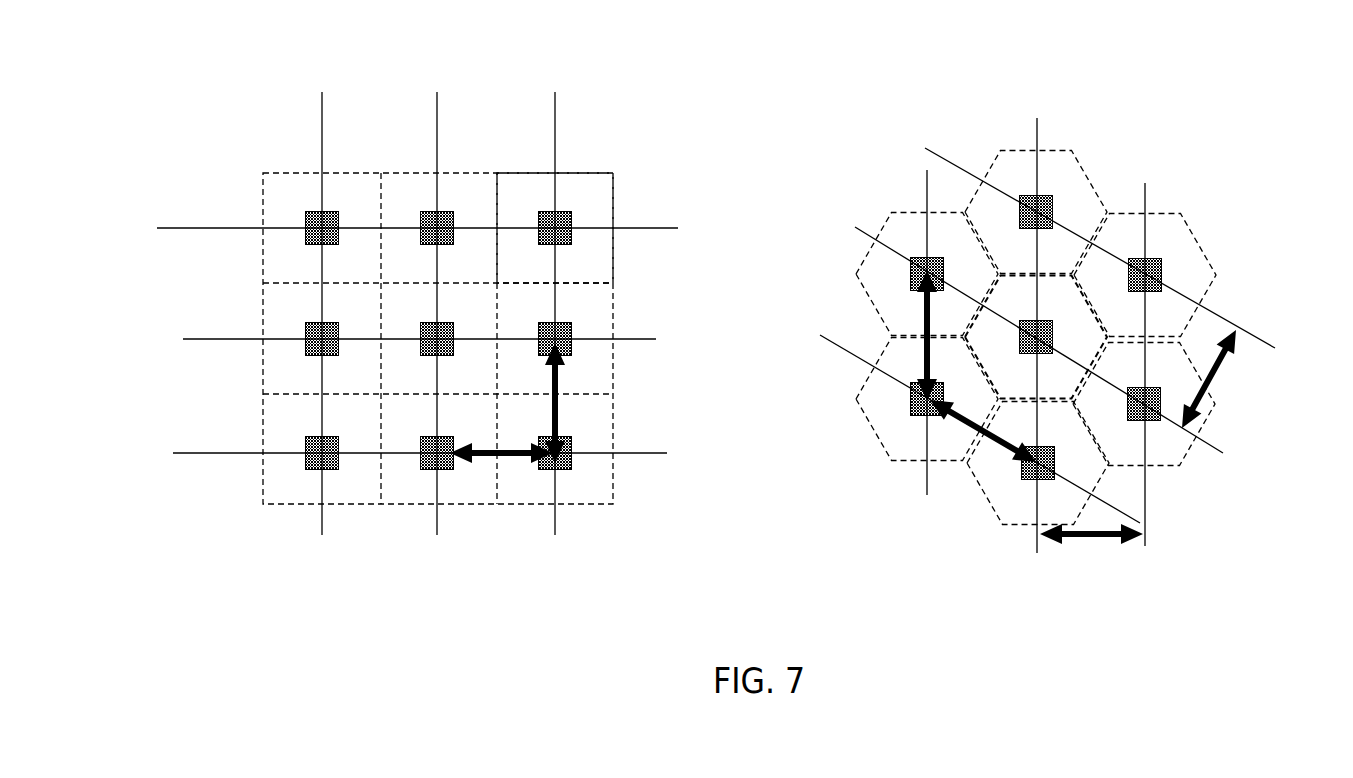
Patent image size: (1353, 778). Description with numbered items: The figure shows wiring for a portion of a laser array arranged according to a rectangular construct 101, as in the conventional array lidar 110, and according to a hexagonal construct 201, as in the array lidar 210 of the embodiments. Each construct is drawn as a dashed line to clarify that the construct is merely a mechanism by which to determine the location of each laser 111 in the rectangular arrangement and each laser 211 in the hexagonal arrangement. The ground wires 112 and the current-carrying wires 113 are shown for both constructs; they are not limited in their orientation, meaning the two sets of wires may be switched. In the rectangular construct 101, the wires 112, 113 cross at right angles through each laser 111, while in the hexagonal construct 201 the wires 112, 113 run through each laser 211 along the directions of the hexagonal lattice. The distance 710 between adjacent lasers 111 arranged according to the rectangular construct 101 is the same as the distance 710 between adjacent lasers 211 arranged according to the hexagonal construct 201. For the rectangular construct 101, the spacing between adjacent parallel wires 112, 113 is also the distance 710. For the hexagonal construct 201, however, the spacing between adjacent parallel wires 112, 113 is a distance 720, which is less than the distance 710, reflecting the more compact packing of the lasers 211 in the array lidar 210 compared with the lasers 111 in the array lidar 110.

The array lidar 110 is at (667, 102).
The rectangular construct 101 is at (582, 175).
The laser 111 is at (582, 212).
The ground wires 112 is at (202, 237).
The current-carrying wires 113 is at (422, 120).
The array lidar 210 is at (937, 133).
The hexagonal construct 201 is at (1187, 222).
The laser 211 is at (1055, 192).
The distance 710 is at (484, 448).
The distance 720 is at (1220, 370).